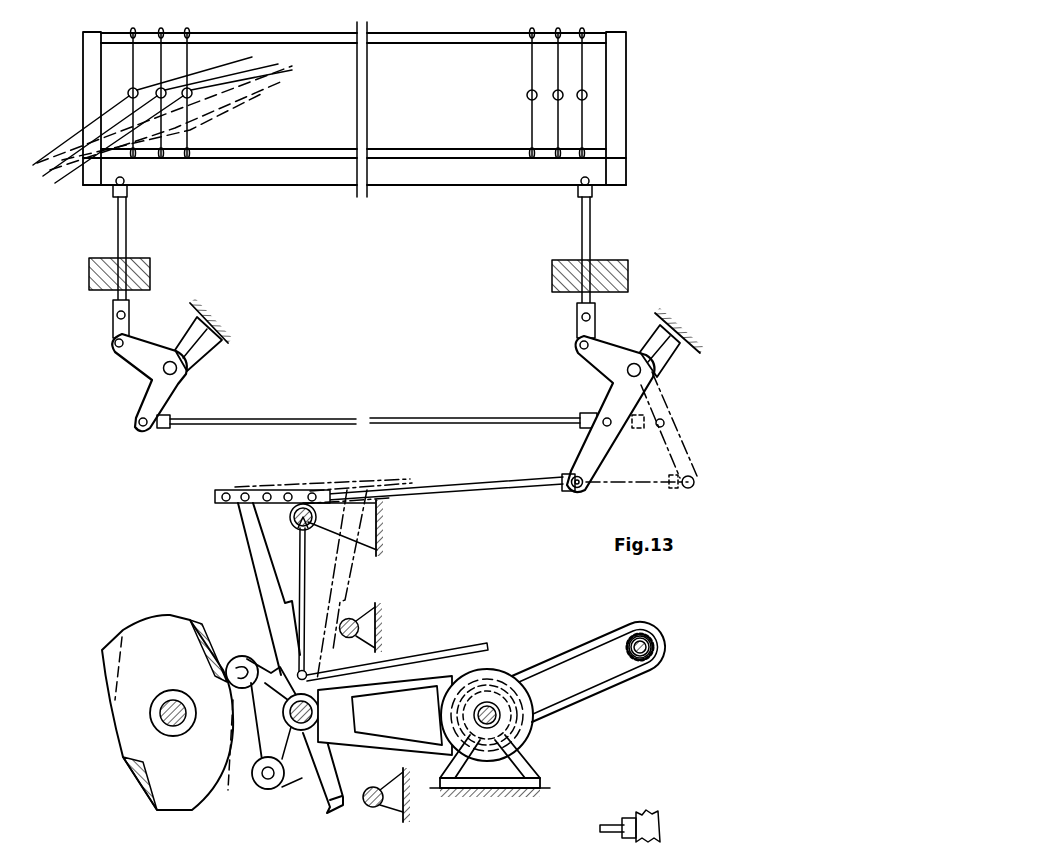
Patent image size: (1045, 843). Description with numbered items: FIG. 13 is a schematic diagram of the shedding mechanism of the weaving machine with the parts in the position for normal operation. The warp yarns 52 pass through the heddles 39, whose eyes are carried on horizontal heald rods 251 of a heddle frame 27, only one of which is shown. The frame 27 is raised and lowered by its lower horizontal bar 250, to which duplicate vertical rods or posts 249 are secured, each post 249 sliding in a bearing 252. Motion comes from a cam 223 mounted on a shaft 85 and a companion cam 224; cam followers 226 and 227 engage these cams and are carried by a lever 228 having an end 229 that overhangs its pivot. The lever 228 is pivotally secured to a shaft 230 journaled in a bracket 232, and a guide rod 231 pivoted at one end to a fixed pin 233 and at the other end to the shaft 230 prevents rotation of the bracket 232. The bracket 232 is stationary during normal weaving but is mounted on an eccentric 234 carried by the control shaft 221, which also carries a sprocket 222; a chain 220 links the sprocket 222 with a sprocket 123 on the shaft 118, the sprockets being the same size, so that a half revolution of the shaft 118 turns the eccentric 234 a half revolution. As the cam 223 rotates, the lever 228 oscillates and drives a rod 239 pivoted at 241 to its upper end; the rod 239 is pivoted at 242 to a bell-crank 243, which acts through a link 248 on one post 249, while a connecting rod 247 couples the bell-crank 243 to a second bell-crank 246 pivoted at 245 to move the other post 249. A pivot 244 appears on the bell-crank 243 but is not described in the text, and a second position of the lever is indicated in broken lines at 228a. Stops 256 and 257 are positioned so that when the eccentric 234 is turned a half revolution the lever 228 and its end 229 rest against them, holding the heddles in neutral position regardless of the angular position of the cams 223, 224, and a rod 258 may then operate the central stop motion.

The heddle frame 27 is at (98, 36).
The heddles 39 is at (580, 91).
The warp yarns 52 is at (80, 136).
The shaft 85 is at (160, 714).
The shaft 118 is at (648, 638).
The sprocket 123 is at (660, 650).
The chain 220 is at (590, 696).
The control shaft 221 is at (505, 703).
The sprocket 222 is at (475, 716).
The cam 223 is at (200, 788).
The cam 224 is at (218, 598).
The cam follower 226 is at (262, 790).
The cam follower 227 is at (258, 648).
The lever 228 is at (252, 546).
The lever phantom position 228a is at (345, 570).
The lever end 229 is at (340, 826).
The shaft 230 is at (322, 745).
The guide rod 231 is at (298, 570).
The bracket 232 is at (384, 684).
The fixed pin 233 is at (290, 517).
The eccentric 234 is at (478, 680).
The rod 239 is at (518, 480).
The pivot 241 is at (267, 492).
The pivot 242 is at (580, 487).
The bell-crank 243 is at (600, 362).
The spring 244 is at (645, 371).
The pivot 245 is at (176, 370).
The bell-crank 246 is at (150, 380).
The connecting rod 247 is at (346, 418).
The link 248 is at (113, 326).
The vertical rod 249 is at (127, 224).
The lower horizontal bar 250 is at (392, 186).
The horizontal heald rods 251 is at (455, 45).
The bearing 252 is at (150, 272).
The stop 256 is at (365, 806).
The stop 257 is at (356, 618).
The rod 258 is at (462, 646).